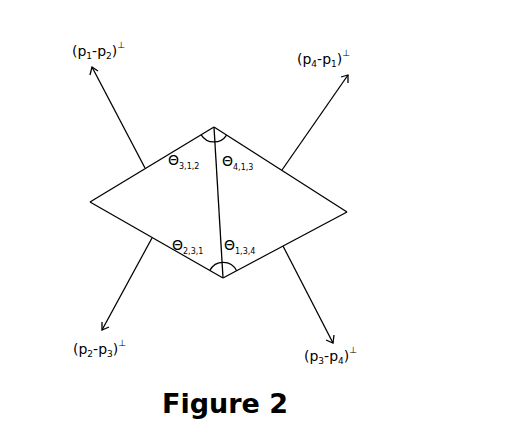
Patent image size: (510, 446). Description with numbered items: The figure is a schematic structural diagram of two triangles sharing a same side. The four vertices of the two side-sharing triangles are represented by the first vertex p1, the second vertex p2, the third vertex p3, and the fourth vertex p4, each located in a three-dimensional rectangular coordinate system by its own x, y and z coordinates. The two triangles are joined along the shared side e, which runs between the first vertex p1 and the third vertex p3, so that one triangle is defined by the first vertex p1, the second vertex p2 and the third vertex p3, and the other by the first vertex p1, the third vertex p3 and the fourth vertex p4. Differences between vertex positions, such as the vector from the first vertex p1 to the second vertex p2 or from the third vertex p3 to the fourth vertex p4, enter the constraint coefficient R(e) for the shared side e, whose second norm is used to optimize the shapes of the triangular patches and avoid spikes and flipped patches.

The first vertex p1 is at (218, 160).
The second vertex p2 is at (145, 236).
The third vertex p3 is at (223, 283).
The fourth vertex p4 is at (294, 241).
The shared side e is at (216, 202).